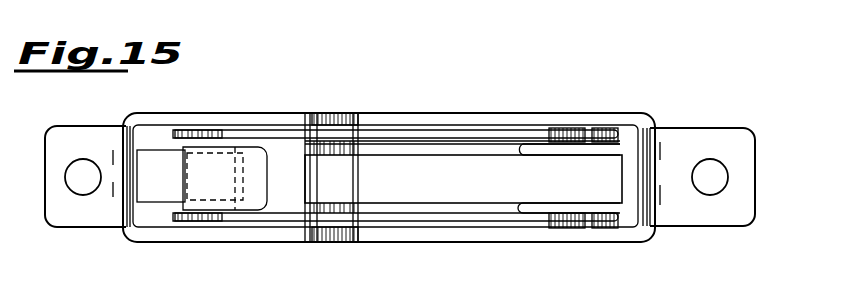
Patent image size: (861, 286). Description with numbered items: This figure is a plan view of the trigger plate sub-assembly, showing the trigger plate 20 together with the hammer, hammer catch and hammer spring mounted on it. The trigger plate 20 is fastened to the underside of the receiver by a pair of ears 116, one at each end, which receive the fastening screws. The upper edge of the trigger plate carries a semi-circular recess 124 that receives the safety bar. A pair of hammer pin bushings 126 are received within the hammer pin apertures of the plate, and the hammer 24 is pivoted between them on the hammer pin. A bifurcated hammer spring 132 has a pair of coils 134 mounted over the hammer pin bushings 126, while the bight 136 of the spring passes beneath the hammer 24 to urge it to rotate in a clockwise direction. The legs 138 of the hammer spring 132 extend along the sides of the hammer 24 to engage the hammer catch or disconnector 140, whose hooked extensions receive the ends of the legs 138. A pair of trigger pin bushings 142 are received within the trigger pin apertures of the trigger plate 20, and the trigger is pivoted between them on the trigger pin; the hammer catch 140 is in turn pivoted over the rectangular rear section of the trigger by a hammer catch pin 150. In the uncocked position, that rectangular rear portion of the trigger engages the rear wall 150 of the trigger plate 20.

The trigger plate 20 is at (488, 102).
The hammer 24 is at (470, 189).
The ears 116 is at (87, 128).
The semi-circular recess 124 is at (350, 114).
The hammer pin bushings 126 is at (602, 137).
The hammer spring 132 is at (370, 226).
The coils 134 is at (573, 133).
The bight 136 is at (517, 152).
The legs 138 is at (415, 134).
The hammer catch 140 is at (205, 210).
The trigger pin bushings 142 is at (292, 128).
The rear wall 150 is at (242, 174).